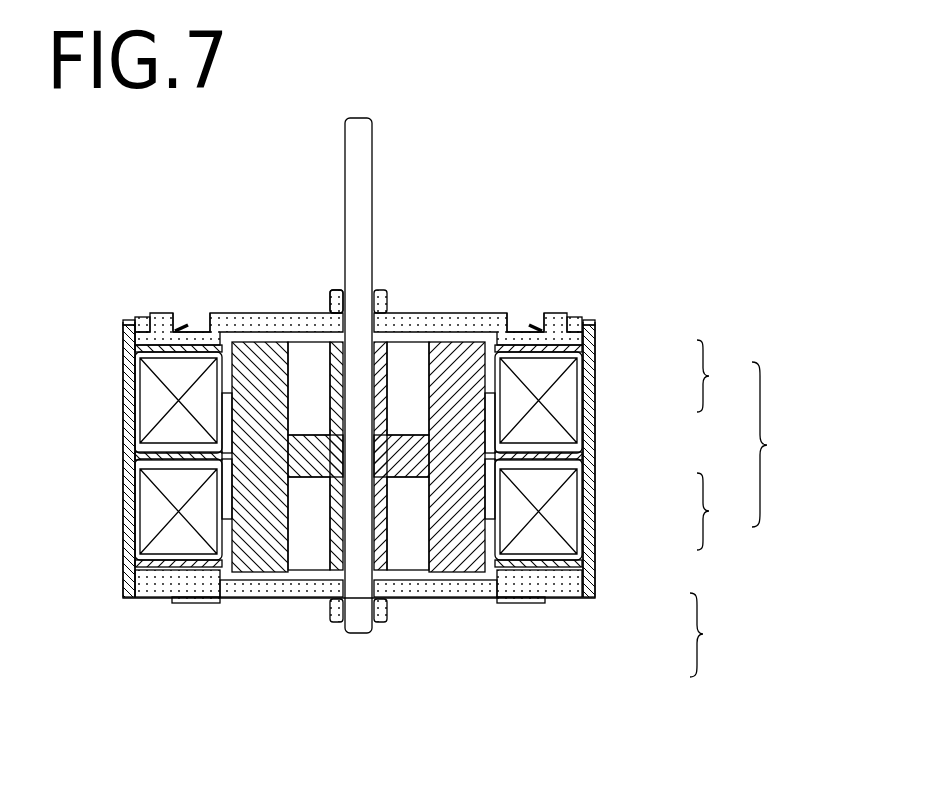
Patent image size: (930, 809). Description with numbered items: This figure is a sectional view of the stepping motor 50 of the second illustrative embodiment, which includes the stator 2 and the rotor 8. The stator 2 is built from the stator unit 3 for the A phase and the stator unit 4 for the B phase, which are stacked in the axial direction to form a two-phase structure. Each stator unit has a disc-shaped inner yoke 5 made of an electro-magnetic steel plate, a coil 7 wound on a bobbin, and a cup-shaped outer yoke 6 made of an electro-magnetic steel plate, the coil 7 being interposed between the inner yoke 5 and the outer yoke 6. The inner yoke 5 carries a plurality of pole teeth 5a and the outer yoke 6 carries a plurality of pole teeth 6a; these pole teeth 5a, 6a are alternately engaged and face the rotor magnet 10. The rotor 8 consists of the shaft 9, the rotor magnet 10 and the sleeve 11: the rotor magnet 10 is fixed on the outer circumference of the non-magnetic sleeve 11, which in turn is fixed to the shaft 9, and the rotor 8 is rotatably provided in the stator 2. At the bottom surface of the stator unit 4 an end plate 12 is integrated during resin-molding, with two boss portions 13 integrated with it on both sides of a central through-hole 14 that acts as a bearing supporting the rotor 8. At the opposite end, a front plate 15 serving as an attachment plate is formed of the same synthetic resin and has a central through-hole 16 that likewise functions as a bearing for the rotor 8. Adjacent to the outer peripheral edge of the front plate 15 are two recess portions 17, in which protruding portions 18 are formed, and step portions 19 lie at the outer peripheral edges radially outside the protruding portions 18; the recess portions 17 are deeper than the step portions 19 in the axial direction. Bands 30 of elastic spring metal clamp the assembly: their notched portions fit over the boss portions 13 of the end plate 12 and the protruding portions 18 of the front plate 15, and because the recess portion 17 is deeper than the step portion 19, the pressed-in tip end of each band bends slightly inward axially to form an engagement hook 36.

The stator 2 is at (769, 444).
The stator unit (A phase) 3 is at (713, 376).
The stator unit (B phase) 4 is at (713, 511).
The inner yoke 5 is at (558, 354).
The pole teeth 5a is at (238, 598).
The outer yoke 6 is at (557, 453).
The pole teeth 6a is at (234, 407).
The coil 7 is at (570, 387).
The rotor 8 is at (687, 635).
The shaft 9 is at (362, 147).
The rotor magnet 10 is at (408, 590).
The sleeve 11 is at (307, 590).
The end plate 12 is at (440, 598).
The boss portions 13 is at (193, 605).
The through-hole 14 is at (347, 633).
The front plate 15 is at (409, 312).
The through-hole 16 is at (343, 322).
The recess portions 17 is at (193, 312).
The protruding portions 18 is at (148, 316).
The step portions 19 is at (132, 311).
The bands 30 is at (122, 345).
The engagement hook 36 is at (181, 326).
The stepping motor 50 is at (719, 206).